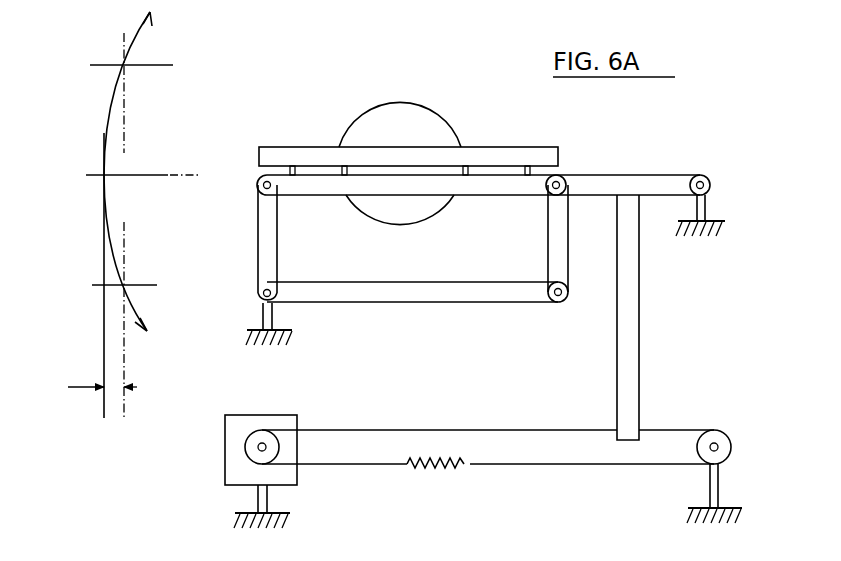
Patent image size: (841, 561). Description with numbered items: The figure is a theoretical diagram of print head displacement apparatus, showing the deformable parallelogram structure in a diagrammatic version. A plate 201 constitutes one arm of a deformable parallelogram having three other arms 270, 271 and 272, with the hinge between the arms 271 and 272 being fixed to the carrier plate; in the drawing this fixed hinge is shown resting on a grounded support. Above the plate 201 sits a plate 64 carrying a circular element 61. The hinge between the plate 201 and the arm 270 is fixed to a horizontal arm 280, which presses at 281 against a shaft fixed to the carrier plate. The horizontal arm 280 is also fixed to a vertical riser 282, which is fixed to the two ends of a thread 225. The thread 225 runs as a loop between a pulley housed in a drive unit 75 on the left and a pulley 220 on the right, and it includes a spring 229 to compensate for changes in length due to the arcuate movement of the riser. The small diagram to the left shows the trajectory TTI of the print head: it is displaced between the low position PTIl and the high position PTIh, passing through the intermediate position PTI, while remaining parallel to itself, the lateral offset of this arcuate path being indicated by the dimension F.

The disc / wafer 61 is at (400, 102).
The plate 64 is at (320, 157).
The plate 201 is at (507, 183).
The arm 272 is at (260, 245).
The arm 270 is at (563, 232).
The arm 271 is at (417, 295).
The horizontal arm 280 is at (668, 148).
The pressing point 281 is at (700, 177).
The vertical riser 282 is at (630, 367).
The thread 225 is at (502, 428).
The spring 229 is at (448, 482).
The pulley 220 is at (717, 428).
The drive pulley housing 75 is at (248, 423).
The tilt trajectory TTI is at (107, 120).
The high print head position PTIh is at (163, 63).
The tilt position PTI is at (157, 180).
The low print head position PTIl is at (143, 283).
The offset distance F is at (102, 376).